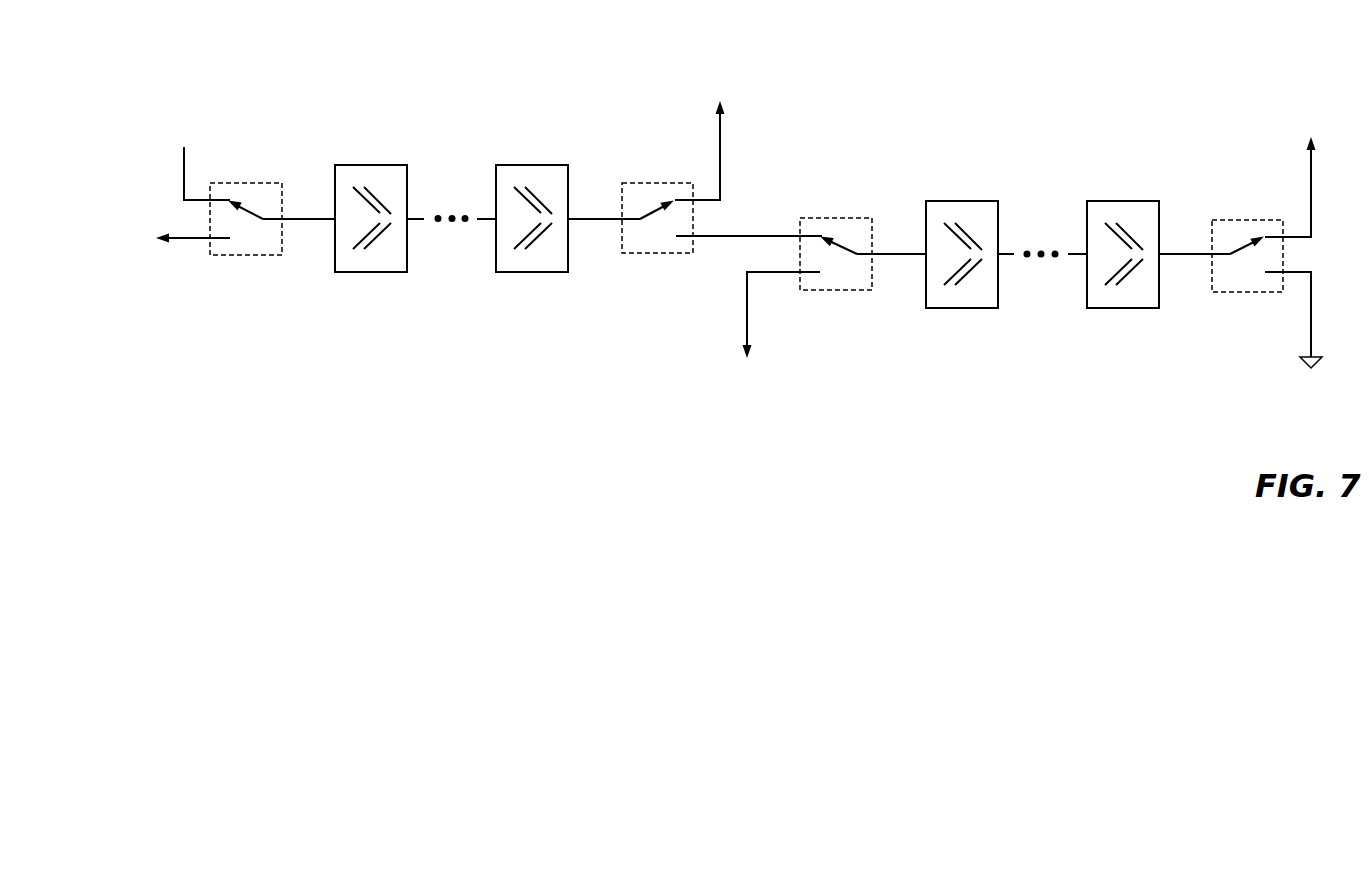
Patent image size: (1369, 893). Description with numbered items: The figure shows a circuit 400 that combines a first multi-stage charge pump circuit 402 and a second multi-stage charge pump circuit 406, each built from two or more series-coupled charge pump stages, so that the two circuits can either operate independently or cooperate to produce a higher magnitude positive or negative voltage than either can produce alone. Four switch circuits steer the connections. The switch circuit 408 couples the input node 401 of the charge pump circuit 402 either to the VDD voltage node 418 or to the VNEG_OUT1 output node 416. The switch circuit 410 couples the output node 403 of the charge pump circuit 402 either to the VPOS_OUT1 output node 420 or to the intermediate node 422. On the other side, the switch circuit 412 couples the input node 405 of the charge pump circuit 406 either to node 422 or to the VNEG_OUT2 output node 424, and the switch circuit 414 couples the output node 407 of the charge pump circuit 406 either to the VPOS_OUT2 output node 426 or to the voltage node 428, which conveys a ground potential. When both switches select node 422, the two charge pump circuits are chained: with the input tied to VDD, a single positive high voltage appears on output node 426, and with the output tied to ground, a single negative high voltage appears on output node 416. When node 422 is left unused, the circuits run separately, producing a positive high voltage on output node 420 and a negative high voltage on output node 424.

The circuit 400 is at (153, 50).
The input node 401 is at (310, 221).
The first multi-stage charge pump circuit 402 is at (568, 130).
The output node 403 is at (597, 221).
The input node 405 is at (902, 256).
The second multi-stage charge pump circuit 406 is at (1158, 165).
The output node 407 is at (1185, 262).
The switch circuit 408 is at (247, 257).
The switch circuit 410 is at (658, 255).
The switch circuit 412 is at (838, 292).
The switch circuit 414 is at (1248, 293).
The VNEG_OUT1 output node 416 is at (178, 242).
The VDD voltage node 418 is at (183, 165).
The VPOS_OUT1 output node 420 is at (722, 145).
The node 422 is at (762, 232).
The VNEG_OUT2 output node 424 is at (745, 326).
The VPOS_OUT2 output node 426 is at (1312, 182).
The voltage node 428 is at (1312, 325).